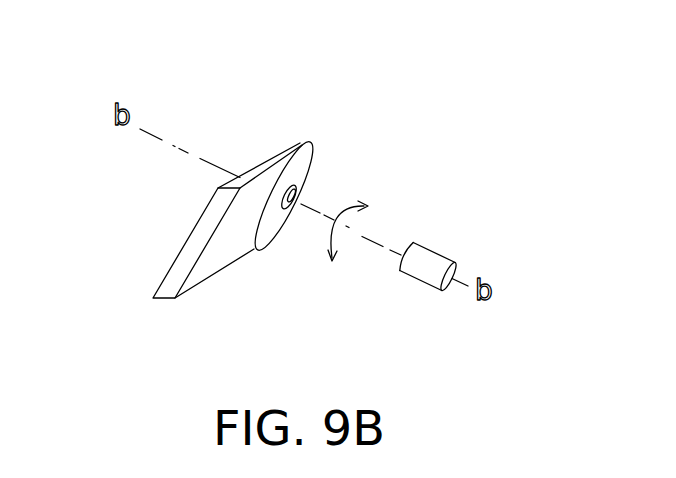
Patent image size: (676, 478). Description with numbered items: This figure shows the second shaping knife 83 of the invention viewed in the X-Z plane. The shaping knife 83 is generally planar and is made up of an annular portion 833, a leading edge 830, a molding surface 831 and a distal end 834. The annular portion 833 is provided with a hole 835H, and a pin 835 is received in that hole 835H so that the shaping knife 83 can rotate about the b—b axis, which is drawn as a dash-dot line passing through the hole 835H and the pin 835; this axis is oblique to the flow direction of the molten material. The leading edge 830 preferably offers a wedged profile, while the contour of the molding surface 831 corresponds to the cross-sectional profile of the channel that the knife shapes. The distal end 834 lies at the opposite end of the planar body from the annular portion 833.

The shaping knife 83 is at (302, 202).
The leading edge 830 is at (302, 141).
The molding surface 831 is at (264, 168).
The annular portion 833 is at (316, 162).
The distal end 834 is at (192, 233).
The pin 835 is at (441, 262).
The hole 835H is at (292, 191).